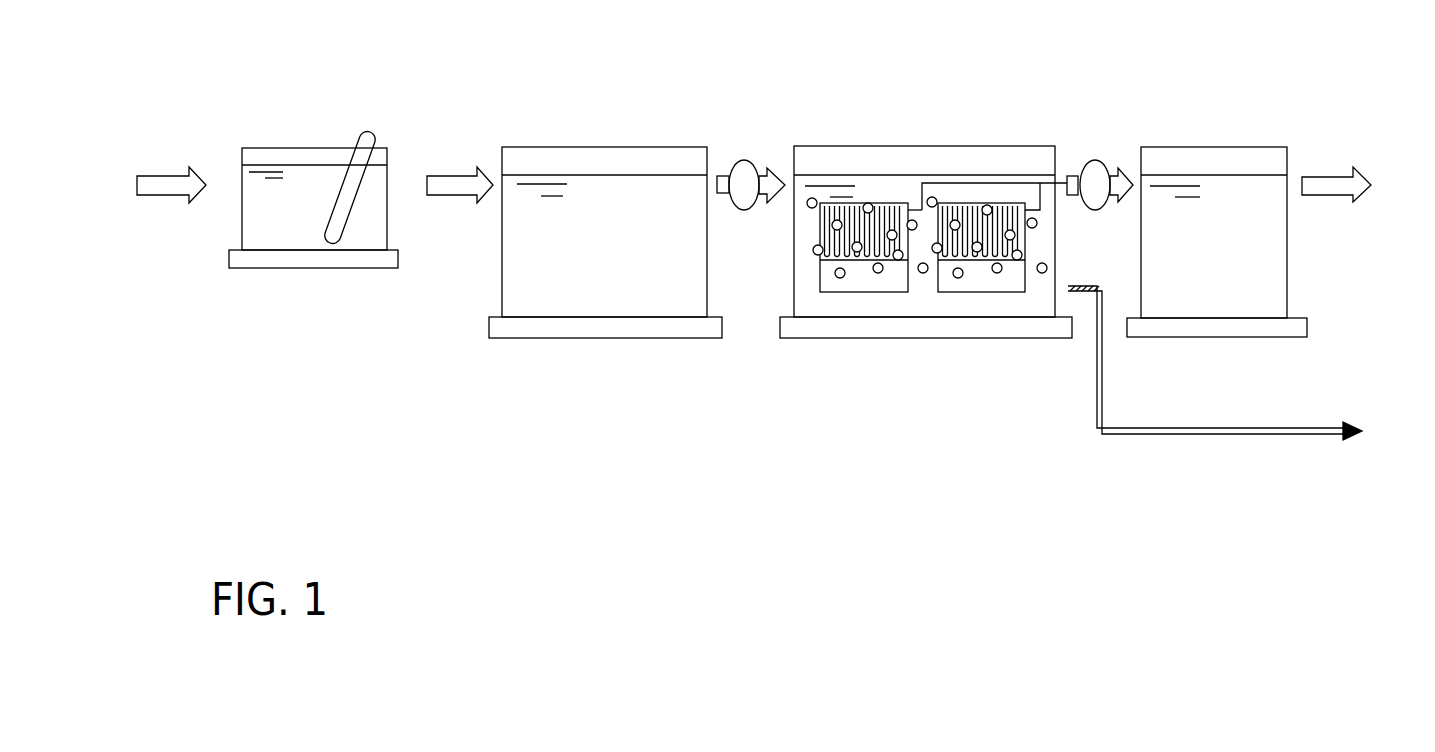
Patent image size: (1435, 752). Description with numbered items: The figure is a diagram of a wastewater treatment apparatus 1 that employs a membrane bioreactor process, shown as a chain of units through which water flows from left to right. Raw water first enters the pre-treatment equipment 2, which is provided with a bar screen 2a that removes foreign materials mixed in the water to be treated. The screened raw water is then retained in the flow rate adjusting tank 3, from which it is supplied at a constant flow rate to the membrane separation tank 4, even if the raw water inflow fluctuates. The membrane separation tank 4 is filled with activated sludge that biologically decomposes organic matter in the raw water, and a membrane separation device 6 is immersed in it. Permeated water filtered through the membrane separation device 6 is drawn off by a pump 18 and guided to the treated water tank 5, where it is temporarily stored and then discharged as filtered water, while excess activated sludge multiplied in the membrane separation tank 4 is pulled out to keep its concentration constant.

The wastewater treatment apparatus 1 is at (703, 439).
The pre-treatment equipment 2 is at (268, 147).
The bar screen 2a is at (371, 127).
The flow rate adjusting tank 3 is at (607, 147).
The membrane separation tank 4 is at (923, 147).
The treated water tank 5 is at (1207, 147).
The membrane separation device 6 is at (847, 292).
The pump 18 is at (1090, 160).